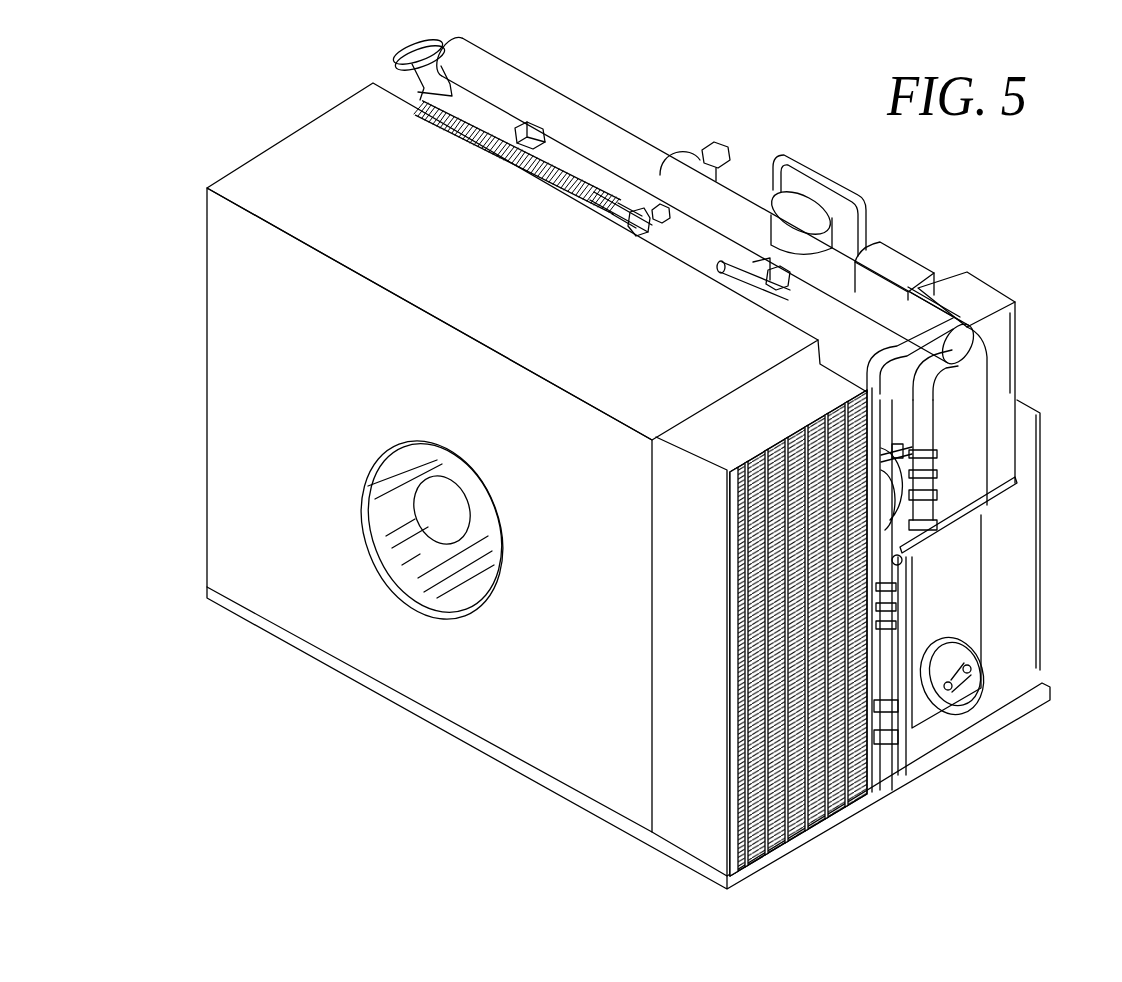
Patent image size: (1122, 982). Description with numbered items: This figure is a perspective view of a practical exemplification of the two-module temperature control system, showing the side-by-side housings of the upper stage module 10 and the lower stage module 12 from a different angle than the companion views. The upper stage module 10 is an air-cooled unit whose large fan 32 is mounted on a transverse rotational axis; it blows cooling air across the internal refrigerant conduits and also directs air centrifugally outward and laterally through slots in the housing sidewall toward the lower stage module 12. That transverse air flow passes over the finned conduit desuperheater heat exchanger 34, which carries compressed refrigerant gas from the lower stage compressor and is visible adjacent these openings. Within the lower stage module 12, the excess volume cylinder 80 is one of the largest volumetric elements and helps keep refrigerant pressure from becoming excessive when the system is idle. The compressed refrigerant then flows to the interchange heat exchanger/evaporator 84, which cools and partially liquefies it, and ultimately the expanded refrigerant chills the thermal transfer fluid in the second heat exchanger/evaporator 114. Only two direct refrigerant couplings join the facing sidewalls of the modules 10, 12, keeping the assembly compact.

The upper stage module 10 is at (317, 183).
The lower stage module 12 is at (653, 123).
The fan 32 is at (433, 563).
The finned conduit desuperheater heat exchanger 34 is at (543, 153).
The excess volume cylinder 80 is at (747, 187).
The interchange heat exchanger/evaporator 84 is at (905, 262).
The second heat exchanger/evaporator 114 is at (1007, 370).